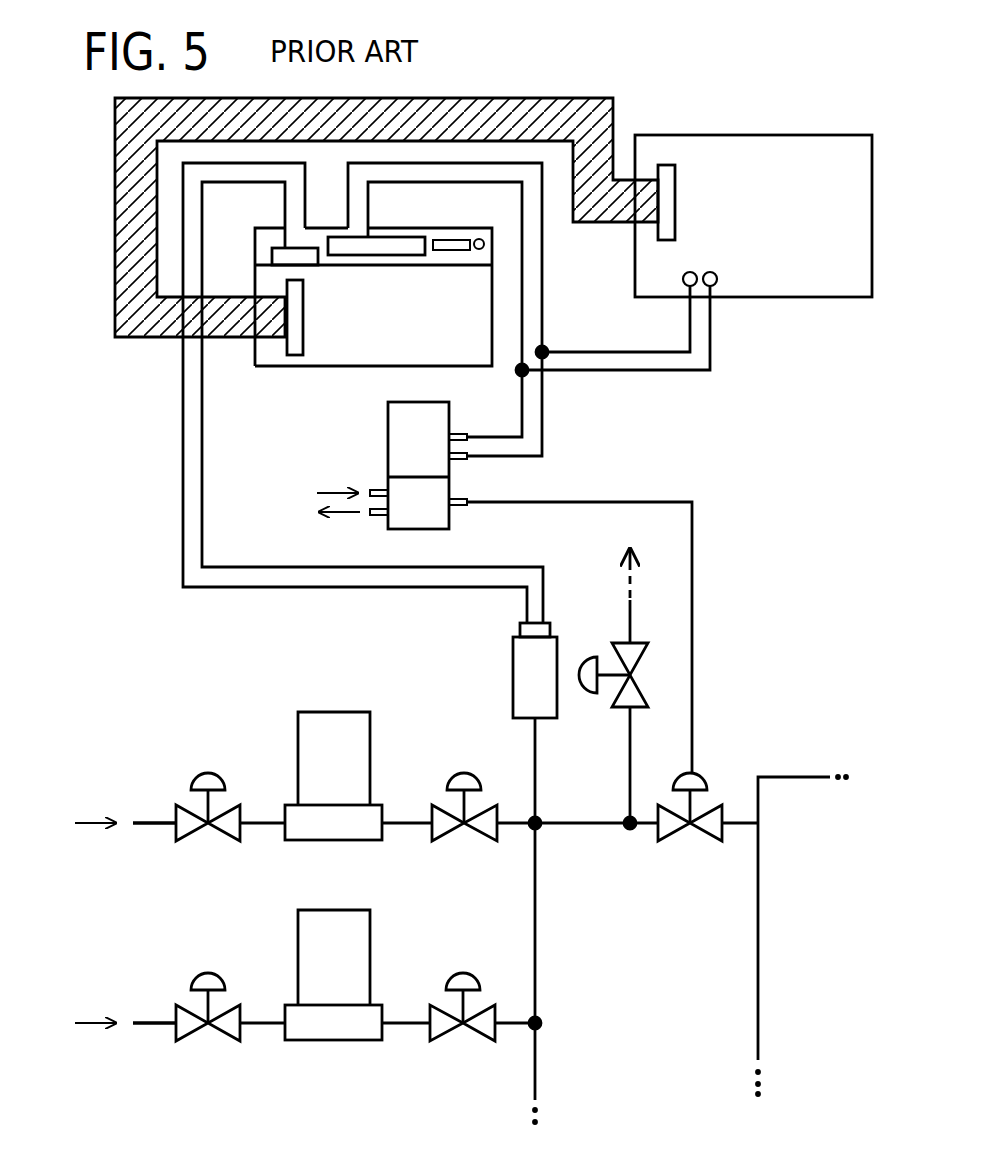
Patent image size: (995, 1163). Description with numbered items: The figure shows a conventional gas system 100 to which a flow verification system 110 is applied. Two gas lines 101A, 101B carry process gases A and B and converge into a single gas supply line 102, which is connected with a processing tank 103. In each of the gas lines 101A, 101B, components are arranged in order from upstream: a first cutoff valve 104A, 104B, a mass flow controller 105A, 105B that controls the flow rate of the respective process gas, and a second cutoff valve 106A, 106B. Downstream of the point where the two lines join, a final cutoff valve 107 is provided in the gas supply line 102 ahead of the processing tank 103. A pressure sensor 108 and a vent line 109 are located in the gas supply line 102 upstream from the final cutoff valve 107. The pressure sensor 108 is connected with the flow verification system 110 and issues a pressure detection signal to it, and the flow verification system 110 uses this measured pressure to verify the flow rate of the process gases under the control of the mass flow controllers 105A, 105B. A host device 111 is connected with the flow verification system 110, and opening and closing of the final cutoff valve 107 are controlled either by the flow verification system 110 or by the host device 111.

The gas system 100 is at (136, 486).
The gas line 101A is at (148, 822).
The gas line 101B is at (148, 1022).
The gas supply line 102 is at (586, 826).
The processing tank 103 is at (802, 936).
The first cutoff valve 104A is at (205, 772).
The first cutoff valve 104B is at (205, 973).
The mass flow controller 105A is at (314, 720).
The mass flow controller 105B is at (314, 922).
The second cutoff valve 106A is at (463, 773).
The second cutoff valve 106B is at (462, 973).
The final cutoff valve 107 is at (712, 830).
The pressure sensor 108 is at (520, 668).
The vent line 109 is at (628, 620).
The flow verification system 110 is at (332, 362).
The host device 111 is at (694, 255).